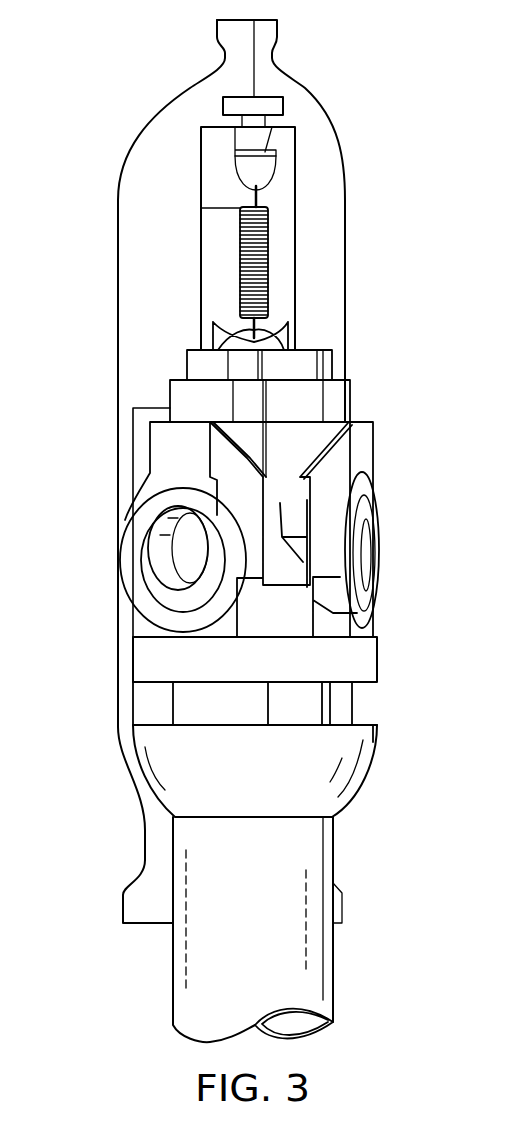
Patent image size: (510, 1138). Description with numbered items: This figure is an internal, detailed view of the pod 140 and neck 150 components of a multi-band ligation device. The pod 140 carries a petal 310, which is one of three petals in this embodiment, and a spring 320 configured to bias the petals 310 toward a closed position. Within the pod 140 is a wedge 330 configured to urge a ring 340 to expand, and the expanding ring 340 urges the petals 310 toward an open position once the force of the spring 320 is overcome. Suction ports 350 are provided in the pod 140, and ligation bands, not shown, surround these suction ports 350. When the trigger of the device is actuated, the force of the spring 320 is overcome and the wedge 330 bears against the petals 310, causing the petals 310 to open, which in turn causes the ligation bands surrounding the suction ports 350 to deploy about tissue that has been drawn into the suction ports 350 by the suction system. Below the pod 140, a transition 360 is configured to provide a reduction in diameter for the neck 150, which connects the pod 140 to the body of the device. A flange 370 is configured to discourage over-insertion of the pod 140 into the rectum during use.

The pod 140 is at (403, 78).
The neck 150 is at (346, 962).
The petal 310 is at (127, 207).
The spring 320 is at (267, 272).
The wedge 330 is at (242, 395).
The ring 340 is at (160, 466).
The suction port 350 is at (173, 568).
The transition 360 is at (370, 768).
The flange 370 is at (133, 910).